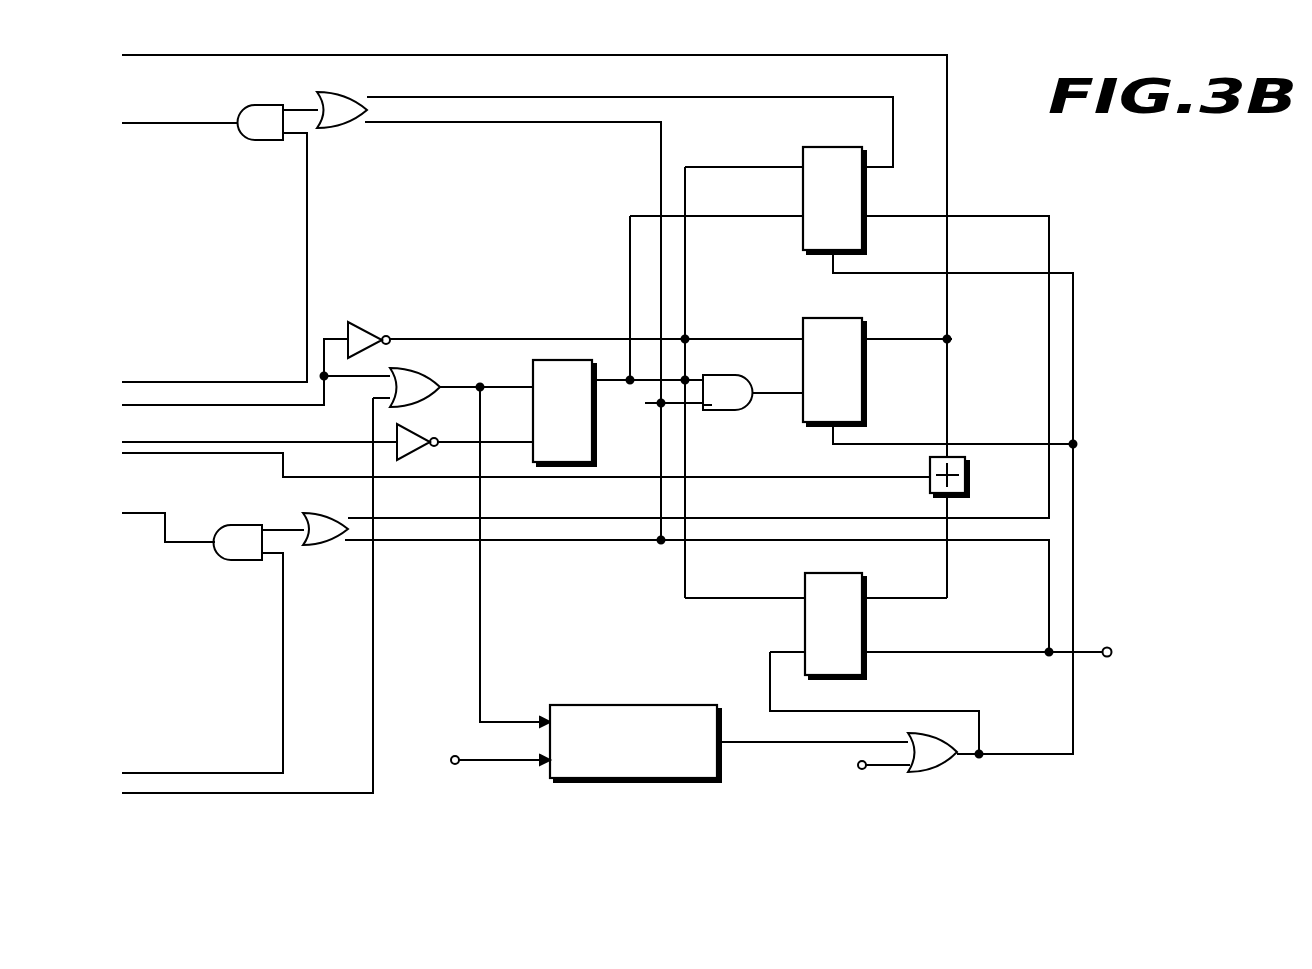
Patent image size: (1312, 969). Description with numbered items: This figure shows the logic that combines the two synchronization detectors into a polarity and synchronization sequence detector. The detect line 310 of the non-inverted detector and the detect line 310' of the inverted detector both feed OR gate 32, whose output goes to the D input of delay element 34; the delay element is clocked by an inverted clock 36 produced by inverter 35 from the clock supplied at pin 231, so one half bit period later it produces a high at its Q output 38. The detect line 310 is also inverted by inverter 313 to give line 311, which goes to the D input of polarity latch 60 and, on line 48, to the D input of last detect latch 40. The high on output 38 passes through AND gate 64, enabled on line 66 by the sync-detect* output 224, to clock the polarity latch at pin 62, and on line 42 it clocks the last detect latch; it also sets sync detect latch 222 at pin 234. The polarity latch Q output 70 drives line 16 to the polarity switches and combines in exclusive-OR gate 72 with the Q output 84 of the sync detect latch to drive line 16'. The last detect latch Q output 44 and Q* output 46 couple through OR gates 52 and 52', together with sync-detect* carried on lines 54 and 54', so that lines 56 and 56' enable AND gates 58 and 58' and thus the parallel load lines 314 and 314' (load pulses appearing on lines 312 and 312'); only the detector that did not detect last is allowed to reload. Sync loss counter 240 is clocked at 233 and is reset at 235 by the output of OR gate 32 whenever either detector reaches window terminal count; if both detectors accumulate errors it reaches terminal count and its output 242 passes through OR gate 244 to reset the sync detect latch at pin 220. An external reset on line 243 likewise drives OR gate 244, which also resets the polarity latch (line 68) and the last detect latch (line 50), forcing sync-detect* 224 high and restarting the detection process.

The line 16 is at (557, 326).
The line 16' is at (526, 482).
The parallel load line 314 is at (180, 103).
The parallel load line 314' is at (168, 549).
The AND gate 58 is at (261, 105).
The AND gate 58' is at (238, 565).
The line 56 is at (300, 93).
The AND gate output line 56' is at (283, 510).
The OR gate 52 is at (342, 131).
The OR gate 52' is at (325, 551).
The line 54 is at (515, 333).
The line 54' is at (699, 598).
The line 312 is at (214, 257).
The complementary input line 312' is at (202, 663).
The line 310 is at (256, 390).
The line 310' is at (256, 619).
The line 311 is at (427, 338).
The inverter 313 is at (360, 322).
The pin 231 is at (159, 441).
The OR gate 32 is at (421, 368).
The delay element 34 is at (598, 437).
The inverter 35 is at (418, 452).
The inverted clock 36 is at (507, 439).
The Q output 38 is at (689, 378).
The last detect latch 40 is at (835, 147).
The line 42 is at (762, 218).
The Q output 44 is at (895, 145).
The Q* output 46 is at (918, 213).
The line 48 is at (756, 168).
The latch reset line 50 is at (907, 270).
The polarity latch 60 is at (824, 318).
The pin 62 is at (780, 395).
The AND gate 64 is at (724, 410).
The AND gate input line 66 is at (653, 403).
The polarity latch reset line 68 is at (831, 447).
The Q output 70 is at (953, 339).
The exclusive-OR gate 72 is at (970, 475).
The Q output 84 is at (950, 598).
The pin 220 is at (766, 652).
The sync detect latch 222 is at (803, 623).
The sync-detect* output 224 is at (962, 650).
The pin 234 is at (764, 596).
The counter reset line 235 is at (512, 719).
The sync loss counter 240 is at (622, 705).
The counter output line 242 is at (752, 745).
The line 243 is at (883, 768).
The OR gate 244 is at (928, 773).
The clock input line 233 is at (503, 762).